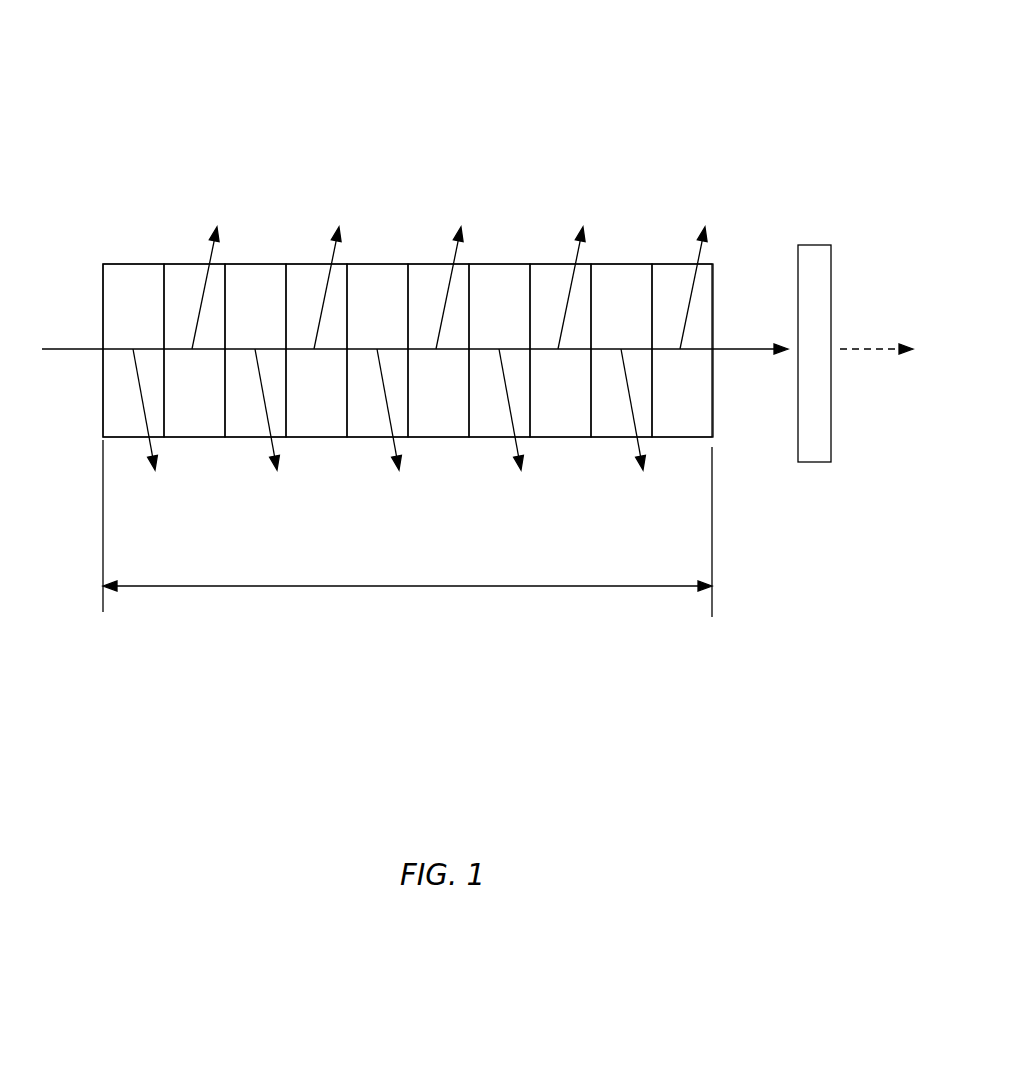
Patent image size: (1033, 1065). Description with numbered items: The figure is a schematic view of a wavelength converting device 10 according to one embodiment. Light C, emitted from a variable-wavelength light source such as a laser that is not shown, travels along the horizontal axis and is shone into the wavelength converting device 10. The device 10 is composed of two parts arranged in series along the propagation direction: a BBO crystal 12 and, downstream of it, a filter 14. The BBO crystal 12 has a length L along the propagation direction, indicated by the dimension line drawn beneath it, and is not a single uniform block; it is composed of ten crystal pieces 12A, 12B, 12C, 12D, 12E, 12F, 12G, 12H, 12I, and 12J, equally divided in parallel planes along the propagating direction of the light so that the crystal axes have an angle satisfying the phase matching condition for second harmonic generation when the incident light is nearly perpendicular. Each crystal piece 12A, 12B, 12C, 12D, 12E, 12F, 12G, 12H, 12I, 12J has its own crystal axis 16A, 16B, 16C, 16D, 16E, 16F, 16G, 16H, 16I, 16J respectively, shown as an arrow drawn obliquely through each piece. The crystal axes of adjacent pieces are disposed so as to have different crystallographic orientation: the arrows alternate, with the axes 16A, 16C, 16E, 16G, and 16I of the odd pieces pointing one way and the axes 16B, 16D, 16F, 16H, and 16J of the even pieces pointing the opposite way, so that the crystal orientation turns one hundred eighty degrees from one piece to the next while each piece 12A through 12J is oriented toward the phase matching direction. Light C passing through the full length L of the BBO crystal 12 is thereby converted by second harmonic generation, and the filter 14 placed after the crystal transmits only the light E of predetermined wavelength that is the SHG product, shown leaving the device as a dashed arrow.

The wavelength converting device 10 is at (810, 107).
The BBO crystal 12 is at (163, 110).
The crystal piece 12A is at (121, 264).
The crystal piece 12B is at (183, 264).
The crystal piece 12C is at (254, 264).
The crystal piece 12D is at (312, 264).
The crystal piece 12E is at (381, 264).
The crystal piece 12F is at (434, 264).
The crystal piece 12G is at (501, 264).
The crystal piece 12H is at (563, 264).
The crystal piece 12I is at (625, 264).
The crystal piece 12J is at (674, 264).
The filter 14 is at (816, 245).
The crystal axis 16A is at (143, 403).
The crystal axis 16B is at (214, 226).
The crystal axis 16C is at (258, 403).
The crystal axis 16D is at (336, 226).
The crystal axis 16E is at (380, 403).
The crystal axis 16F is at (456, 228).
The crystal axis 16G is at (508, 405).
The crystal axis 16H is at (580, 228).
The crystal axis 16I is at (627, 405).
The crystal axis 16J is at (704, 228).
The light C is at (60, 349).
The light of predetermined wavelength E is at (867, 349).
The length L is at (392, 586).